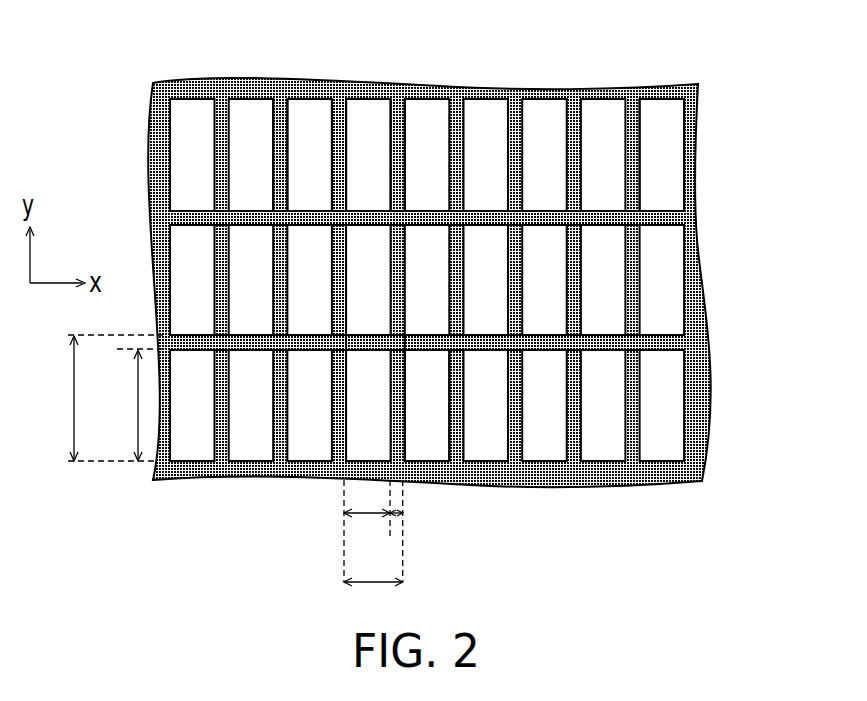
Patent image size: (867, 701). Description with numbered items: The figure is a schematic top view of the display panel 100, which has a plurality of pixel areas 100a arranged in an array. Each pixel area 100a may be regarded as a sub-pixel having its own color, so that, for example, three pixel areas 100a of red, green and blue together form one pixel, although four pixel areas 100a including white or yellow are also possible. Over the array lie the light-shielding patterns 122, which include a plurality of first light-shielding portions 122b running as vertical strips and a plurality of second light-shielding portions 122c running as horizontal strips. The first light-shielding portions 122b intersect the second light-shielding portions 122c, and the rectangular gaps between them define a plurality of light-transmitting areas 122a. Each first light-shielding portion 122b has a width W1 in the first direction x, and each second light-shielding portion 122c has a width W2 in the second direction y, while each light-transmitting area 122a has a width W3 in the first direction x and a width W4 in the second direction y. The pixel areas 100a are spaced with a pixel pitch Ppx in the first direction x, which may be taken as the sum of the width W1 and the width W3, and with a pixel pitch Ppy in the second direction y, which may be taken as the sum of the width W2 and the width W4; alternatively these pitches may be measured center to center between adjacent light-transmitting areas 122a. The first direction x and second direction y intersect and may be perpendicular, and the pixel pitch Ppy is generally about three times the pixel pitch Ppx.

The display panel 100 is at (480, 297).
The pixel area 100a is at (405, 403).
The light-shielding pattern 122 is at (700, 98).
The light-transmitting area 122a is at (676, 129).
The first light-shielding portion 122b is at (397, 107).
The second light-shielding portion 122c is at (677, 219).
The width of first light-shielding portion W1 is at (397, 516).
The width of second light-shielding portion W2 is at (136, 343).
The width of light-transmitting area in first direction W3 is at (363, 514).
The width of light-transmitting area in second direction W4 is at (137, 398).
The pixel pitch in first direction Ppx is at (373, 594).
The pixel pitch in second direction Ppy is at (57, 398).